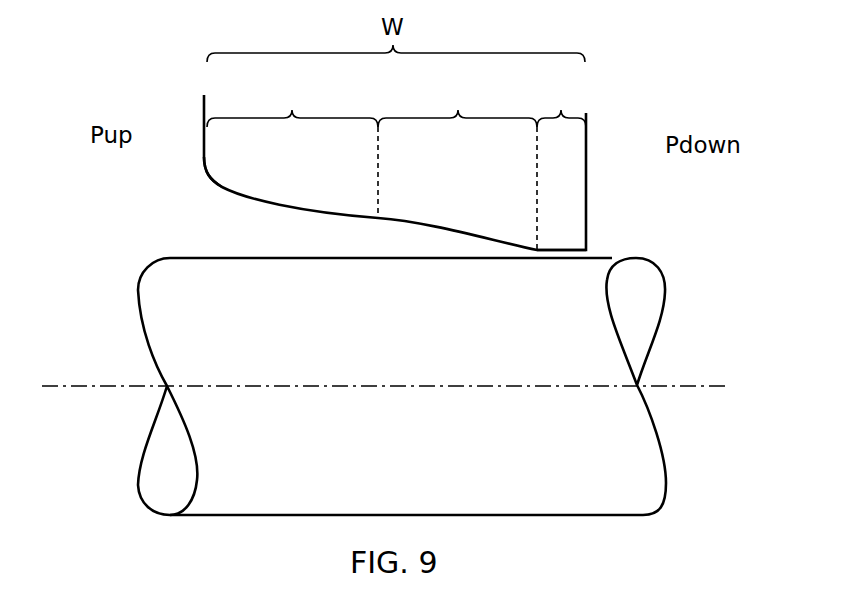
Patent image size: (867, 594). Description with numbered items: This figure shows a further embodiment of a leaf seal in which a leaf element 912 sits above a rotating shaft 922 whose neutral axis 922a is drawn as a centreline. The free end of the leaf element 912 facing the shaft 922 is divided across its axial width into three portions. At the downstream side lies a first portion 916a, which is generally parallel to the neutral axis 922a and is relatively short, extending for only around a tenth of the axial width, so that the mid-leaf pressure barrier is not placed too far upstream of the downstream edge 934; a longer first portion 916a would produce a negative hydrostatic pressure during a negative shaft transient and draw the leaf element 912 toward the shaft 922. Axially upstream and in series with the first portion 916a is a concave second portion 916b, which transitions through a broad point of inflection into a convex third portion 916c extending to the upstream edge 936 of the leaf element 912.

The leaf element 912 is at (612, 103).
The first portion 916a is at (559, 104).
The second portion 916b is at (457, 165).
The third portion 916c is at (292, 149).
The shaft 922 is at (421, 331).
The neutral axis of the rotor 922a is at (690, 388).
The downstream edge 934 is at (575, 252).
The upstream edge 936 is at (215, 228).